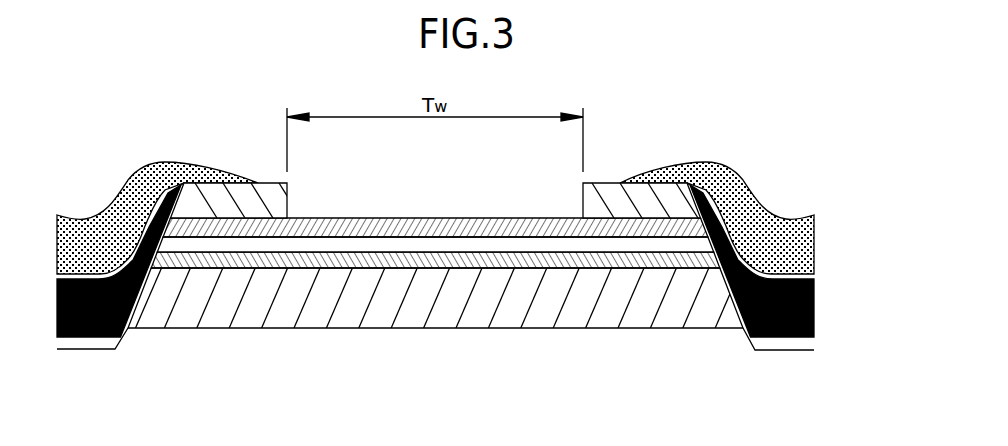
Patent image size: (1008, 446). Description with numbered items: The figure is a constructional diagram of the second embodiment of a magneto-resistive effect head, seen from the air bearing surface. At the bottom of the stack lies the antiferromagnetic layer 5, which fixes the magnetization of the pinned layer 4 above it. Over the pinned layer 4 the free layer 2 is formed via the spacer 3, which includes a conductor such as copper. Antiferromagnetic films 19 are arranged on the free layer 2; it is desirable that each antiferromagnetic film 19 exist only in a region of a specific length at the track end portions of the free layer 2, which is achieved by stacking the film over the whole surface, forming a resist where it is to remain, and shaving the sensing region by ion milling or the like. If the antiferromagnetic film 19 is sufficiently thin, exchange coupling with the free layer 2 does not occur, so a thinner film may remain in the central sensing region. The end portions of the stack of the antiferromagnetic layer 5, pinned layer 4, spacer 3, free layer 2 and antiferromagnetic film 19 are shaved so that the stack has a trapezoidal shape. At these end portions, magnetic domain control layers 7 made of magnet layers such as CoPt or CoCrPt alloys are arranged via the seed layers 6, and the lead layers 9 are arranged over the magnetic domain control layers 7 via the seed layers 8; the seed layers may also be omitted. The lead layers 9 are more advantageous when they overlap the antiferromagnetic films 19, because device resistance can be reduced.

The free layer 2 is at (338, 228).
The spacer 3 is at (370, 245).
The pinned layer 4 is at (405, 262).
The antiferromagnetic layer 5 is at (345, 315).
The seed layer 6 is at (808, 347).
The magnetic domain control layer 7 is at (815, 307).
The seed layer 8 is at (810, 272).
The lead layer 9 is at (810, 240).
The antiferromagnetic film 19 is at (592, 194).